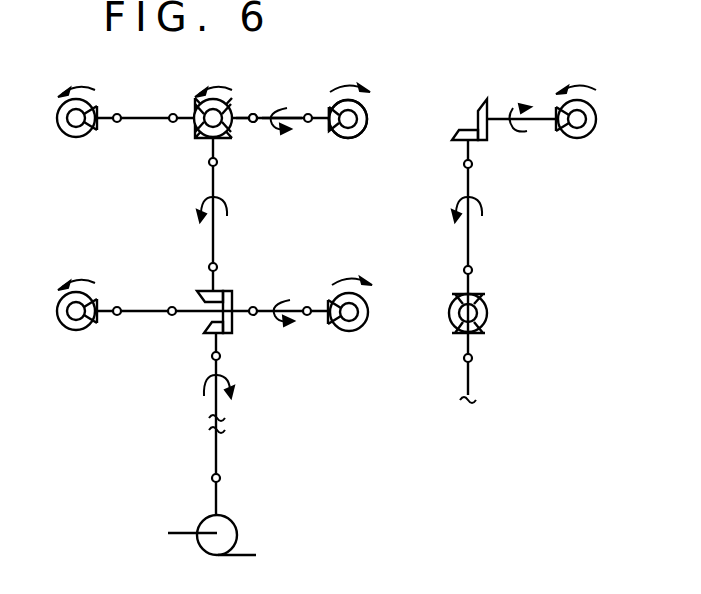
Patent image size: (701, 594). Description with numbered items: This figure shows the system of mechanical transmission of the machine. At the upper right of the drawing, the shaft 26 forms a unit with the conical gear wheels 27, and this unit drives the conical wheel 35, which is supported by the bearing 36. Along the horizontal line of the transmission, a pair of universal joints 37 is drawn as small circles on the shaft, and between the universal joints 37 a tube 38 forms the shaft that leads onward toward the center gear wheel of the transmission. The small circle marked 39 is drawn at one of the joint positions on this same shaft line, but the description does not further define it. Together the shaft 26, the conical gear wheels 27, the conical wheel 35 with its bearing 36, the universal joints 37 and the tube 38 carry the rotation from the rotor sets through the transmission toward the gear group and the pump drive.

The shaft 26 is at (360, 122).
The conical gear wheels 27 is at (352, 138).
The conical wheel 35 is at (330, 131).
The bearing 36 is at (329, 115).
The universal joints 37 is at (307, 113).
The tube 38 is at (254, 125).
The universal joint 39 is at (253, 112).